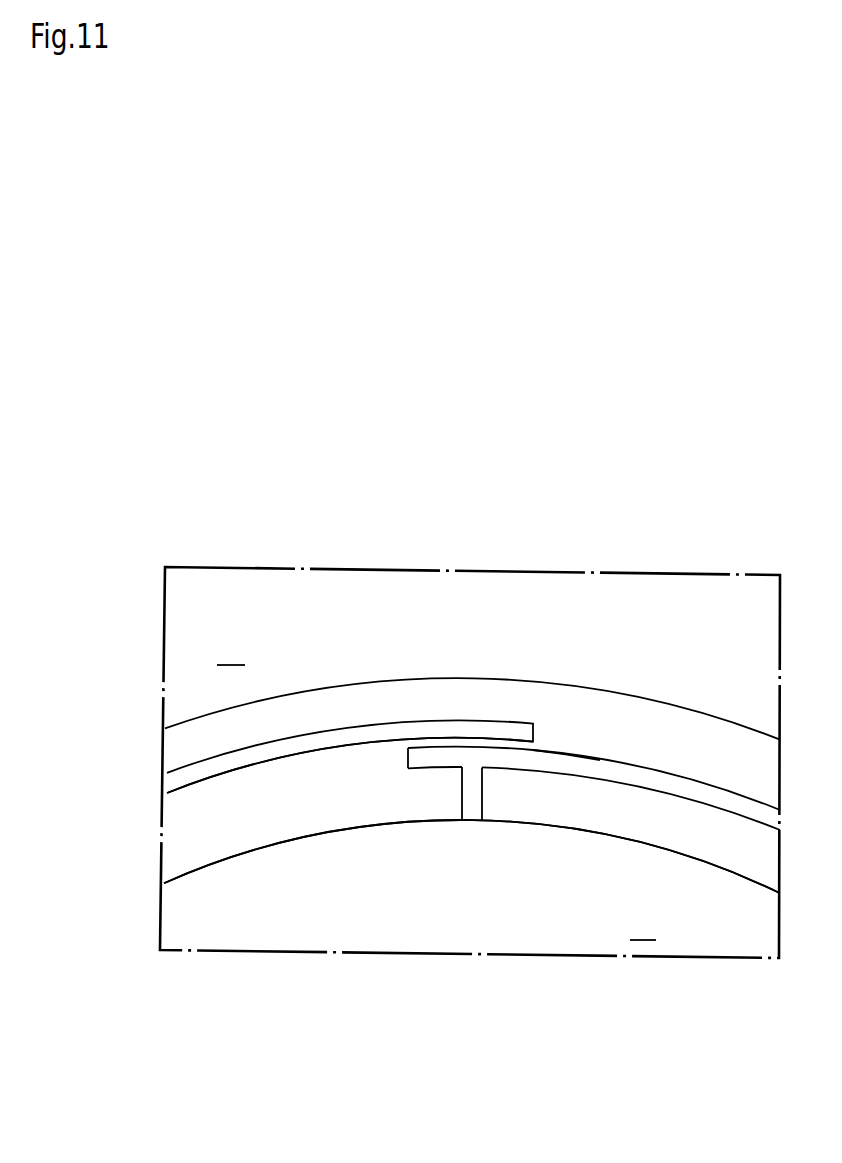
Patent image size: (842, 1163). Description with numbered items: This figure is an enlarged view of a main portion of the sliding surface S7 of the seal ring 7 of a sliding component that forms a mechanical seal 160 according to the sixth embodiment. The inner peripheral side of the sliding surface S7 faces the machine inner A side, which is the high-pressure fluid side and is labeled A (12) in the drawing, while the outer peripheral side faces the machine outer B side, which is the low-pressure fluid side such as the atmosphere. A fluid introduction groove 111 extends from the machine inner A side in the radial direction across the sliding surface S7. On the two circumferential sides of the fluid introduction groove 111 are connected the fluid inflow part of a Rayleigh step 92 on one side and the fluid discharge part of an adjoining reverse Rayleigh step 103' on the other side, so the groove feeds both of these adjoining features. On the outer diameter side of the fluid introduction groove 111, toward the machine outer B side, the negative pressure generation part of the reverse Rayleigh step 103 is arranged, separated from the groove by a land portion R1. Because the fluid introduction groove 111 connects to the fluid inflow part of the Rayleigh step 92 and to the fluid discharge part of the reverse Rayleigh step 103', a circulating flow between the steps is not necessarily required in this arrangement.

The mechanical seal 160 is at (649, 533).
The seal ring 7 is at (632, 725).
The reverse Rayleigh step 103 is at (350, 710).
The adjoining reverse Rayleigh step 103' is at (631, 739).
The land portion R1 is at (475, 742).
The sliding surface S7 is at (562, 717).
The Rayleigh step 92 is at (431, 757).
The fluid introduction groove 111 is at (477, 792).
The machine inner side A is at (471, 881).
The element 12 is at (471, 881).
The machine outer side B is at (231, 650).